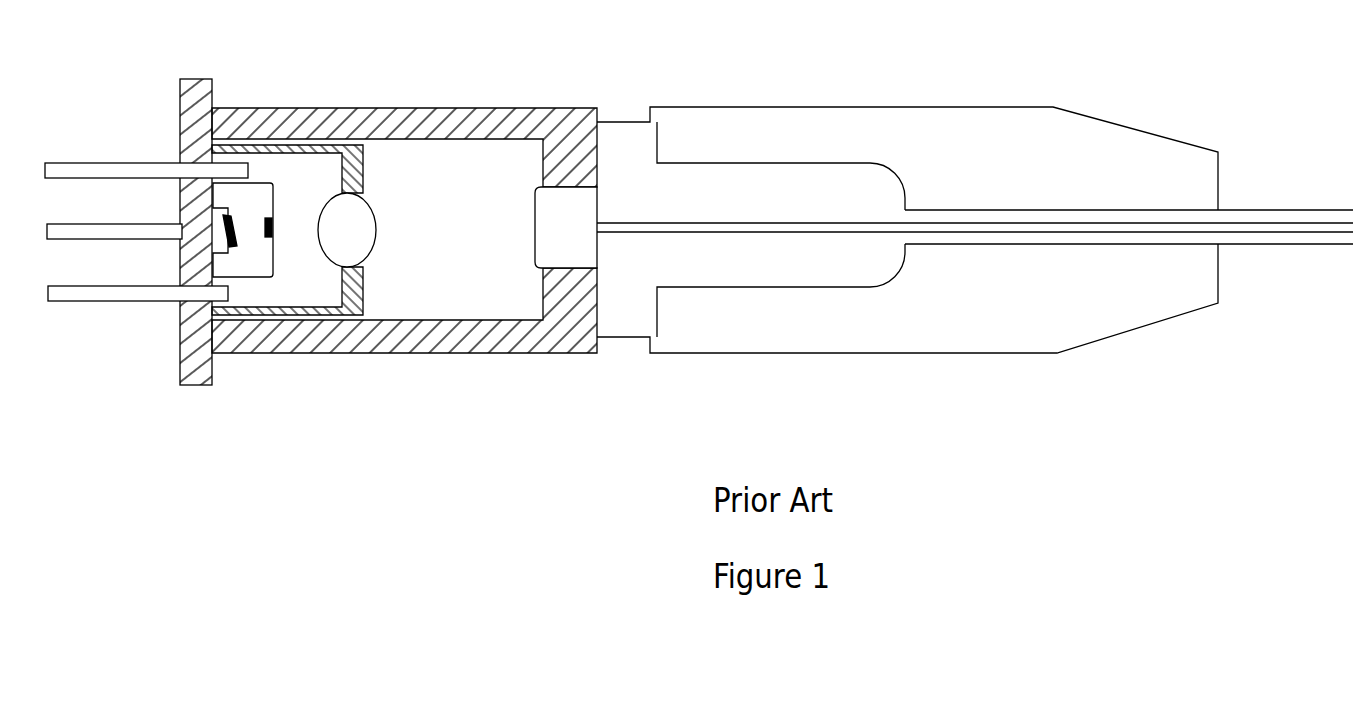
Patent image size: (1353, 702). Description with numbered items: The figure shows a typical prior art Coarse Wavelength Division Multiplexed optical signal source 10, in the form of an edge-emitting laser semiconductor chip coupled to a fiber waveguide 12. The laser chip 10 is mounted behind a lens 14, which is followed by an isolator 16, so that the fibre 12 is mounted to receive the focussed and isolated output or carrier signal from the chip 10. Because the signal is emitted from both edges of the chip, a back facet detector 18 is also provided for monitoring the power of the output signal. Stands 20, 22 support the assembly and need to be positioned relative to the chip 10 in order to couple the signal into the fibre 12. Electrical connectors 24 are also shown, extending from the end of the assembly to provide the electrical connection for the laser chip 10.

The optical signal source 10 is at (270, 210).
The fiber waveguide 12 is at (943, 220).
The lens 14 is at (377, 218).
The isolator 16 is at (535, 212).
The back facet detector 18 is at (240, 215).
The stand 20 is at (365, 163).
The stand 22 is at (557, 132).
The electrical connectors 24 is at (142, 285).